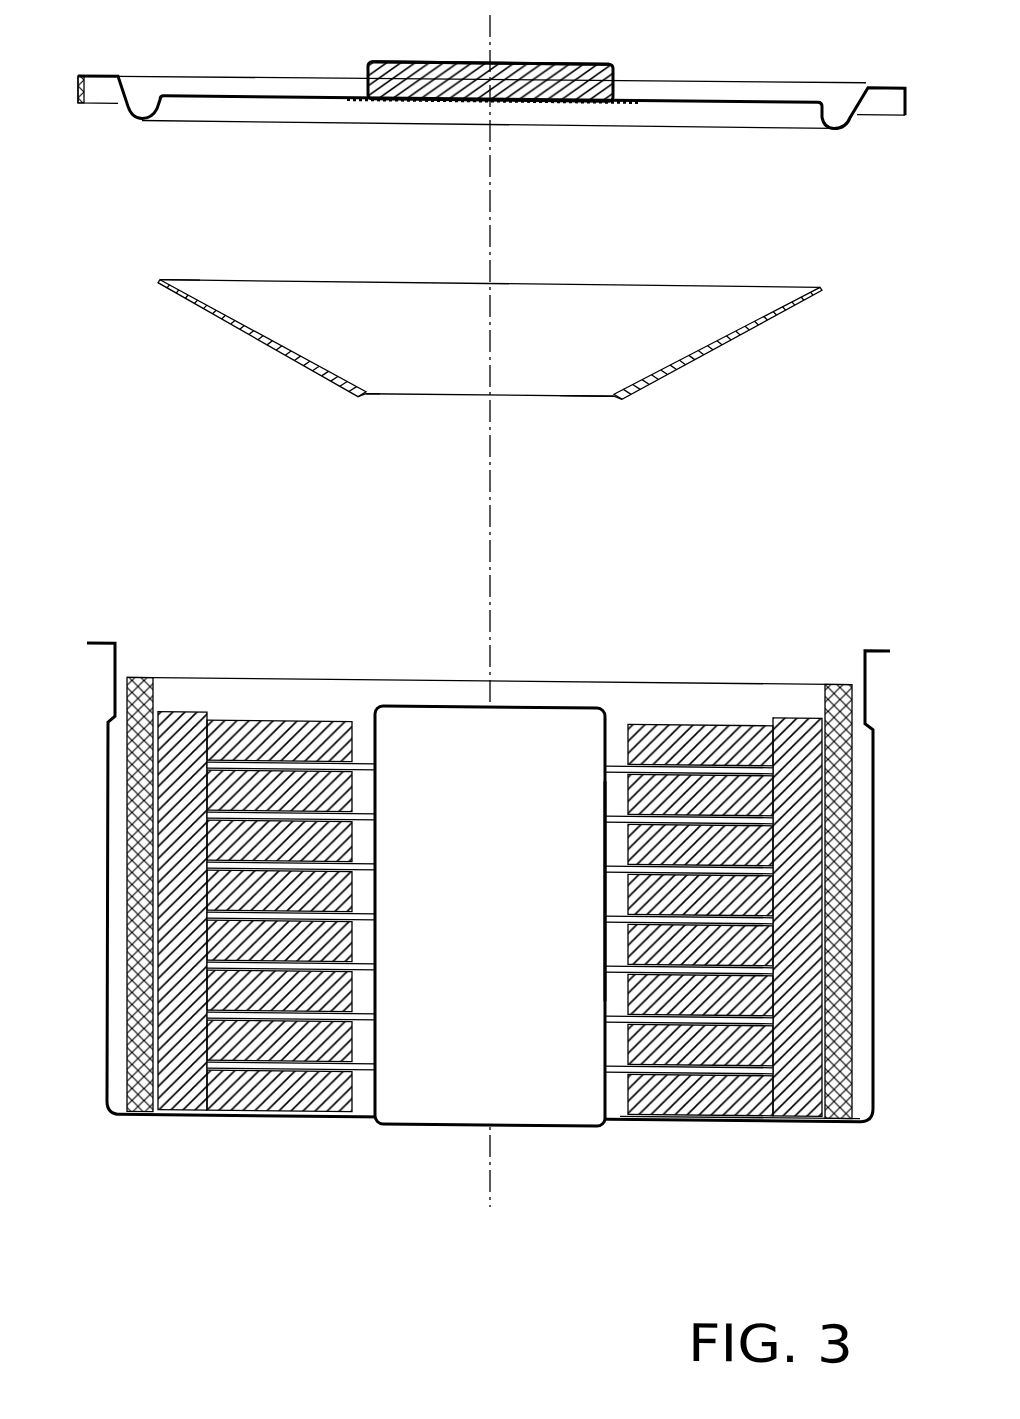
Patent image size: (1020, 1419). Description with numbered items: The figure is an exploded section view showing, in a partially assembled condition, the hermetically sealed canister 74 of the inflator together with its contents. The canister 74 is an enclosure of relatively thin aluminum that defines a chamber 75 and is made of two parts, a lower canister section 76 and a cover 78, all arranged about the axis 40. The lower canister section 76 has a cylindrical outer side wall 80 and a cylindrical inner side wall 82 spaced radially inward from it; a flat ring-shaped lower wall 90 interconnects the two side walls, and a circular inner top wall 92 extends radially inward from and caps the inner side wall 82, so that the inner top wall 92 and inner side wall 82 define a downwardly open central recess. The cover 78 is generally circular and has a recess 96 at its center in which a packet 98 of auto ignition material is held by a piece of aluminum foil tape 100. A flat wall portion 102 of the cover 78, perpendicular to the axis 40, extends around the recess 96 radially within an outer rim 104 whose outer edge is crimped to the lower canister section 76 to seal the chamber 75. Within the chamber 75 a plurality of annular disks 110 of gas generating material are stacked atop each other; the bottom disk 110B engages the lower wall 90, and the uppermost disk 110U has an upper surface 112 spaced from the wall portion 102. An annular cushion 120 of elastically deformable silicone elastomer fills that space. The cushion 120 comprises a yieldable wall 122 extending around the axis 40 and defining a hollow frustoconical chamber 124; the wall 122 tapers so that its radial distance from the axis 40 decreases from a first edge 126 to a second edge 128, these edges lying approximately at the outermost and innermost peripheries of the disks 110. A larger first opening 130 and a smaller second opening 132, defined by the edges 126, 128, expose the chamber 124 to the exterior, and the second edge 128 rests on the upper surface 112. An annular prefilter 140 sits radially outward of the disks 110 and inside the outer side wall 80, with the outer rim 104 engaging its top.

The axis 40 is at (488, 570).
The canister 74 is at (490, 85).
The chamber 75 is at (467, 909).
The lower canister section 76 is at (606, 1124).
The cover 78 is at (262, 82).
The cylindrical outer side wall 80 is at (107, 760).
The cylindrical inner side wall 82 is at (605, 852).
The lower wall 90 is at (735, 1122).
The inner top wall 92 is at (455, 705).
The recess 96 is at (555, 80).
The packet of auto ignition material 98 is at (435, 62).
The aluminum foil tape 100 is at (562, 105).
The flat wall portion 102 is at (225, 101).
The outer rim 104 is at (138, 102).
The annular disks of gas generating material 110 is at (346, 940).
The uppermost disk 110U is at (628, 757).
The bottom disk 110B is at (628, 1105).
The upper surface 112 is at (240, 723).
The annular cushion 120 is at (438, 324).
The yieldable wall 122 is at (265, 343).
The frustoconical-shaped chamber 124 is at (565, 358).
The first edge 126 is at (170, 283).
The second edge 128 is at (360, 397).
The first opening 130 is at (596, 286).
The second opening 132 is at (572, 398).
The annular prefilter 140 is at (140, 726).